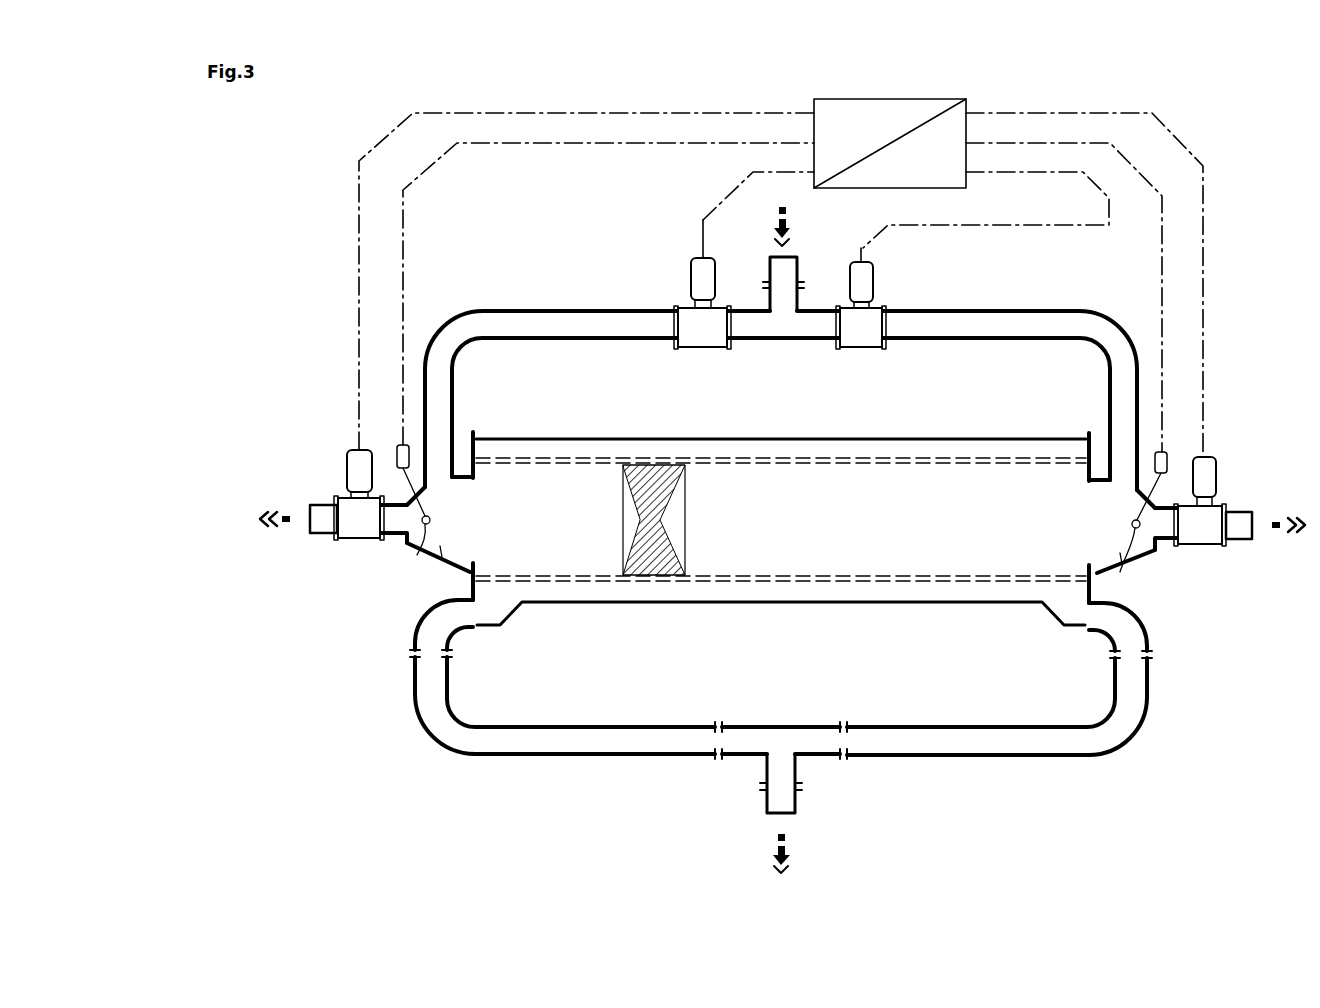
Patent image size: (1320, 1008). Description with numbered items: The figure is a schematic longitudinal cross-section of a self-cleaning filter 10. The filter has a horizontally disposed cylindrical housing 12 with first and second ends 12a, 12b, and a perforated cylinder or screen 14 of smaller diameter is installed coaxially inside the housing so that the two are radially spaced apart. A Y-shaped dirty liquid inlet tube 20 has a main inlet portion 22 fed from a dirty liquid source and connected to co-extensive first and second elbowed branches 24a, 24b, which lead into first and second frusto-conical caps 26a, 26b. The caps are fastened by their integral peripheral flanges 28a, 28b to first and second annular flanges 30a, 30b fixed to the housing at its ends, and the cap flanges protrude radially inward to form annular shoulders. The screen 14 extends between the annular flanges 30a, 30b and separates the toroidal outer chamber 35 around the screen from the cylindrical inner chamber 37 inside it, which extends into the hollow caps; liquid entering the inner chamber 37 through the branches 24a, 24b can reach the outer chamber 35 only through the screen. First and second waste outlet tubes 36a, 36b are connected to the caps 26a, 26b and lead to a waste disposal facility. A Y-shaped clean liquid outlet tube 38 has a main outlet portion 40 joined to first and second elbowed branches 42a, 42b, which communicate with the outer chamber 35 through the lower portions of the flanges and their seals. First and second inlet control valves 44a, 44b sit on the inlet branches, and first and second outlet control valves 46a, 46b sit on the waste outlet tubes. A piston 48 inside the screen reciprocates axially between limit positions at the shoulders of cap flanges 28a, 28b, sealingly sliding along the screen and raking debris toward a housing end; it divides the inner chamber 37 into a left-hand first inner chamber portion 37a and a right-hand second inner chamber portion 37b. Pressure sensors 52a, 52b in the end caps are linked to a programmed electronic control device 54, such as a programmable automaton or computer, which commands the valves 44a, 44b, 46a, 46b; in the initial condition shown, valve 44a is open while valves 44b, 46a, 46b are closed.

The self-cleaning filter 10 is at (515, 260).
The cylindrical housing 12 is at (845, 440).
The first end of housing 12a is at (387, 480).
The second end of housing 12b is at (1181, 482).
The perforated cylinder or screen 14 is at (952, 583).
The dirty liquid inlet tube 20 is at (591, 300).
The main inlet portion 22 is at (790, 265).
The first elbowed branch 24a is at (474, 326).
The second elbowed branch 24b is at (1022, 324).
The first frusto-conical cap 26a is at (440, 555).
The second frusto-conical cap 26b is at (1122, 560).
The first cap flange 28a is at (470, 582).
The second cap flange 28b is at (1095, 590).
The first annular flange 30a is at (478, 455).
The second annular flange 30b is at (1086, 457).
The outer chamber 35 is at (599, 450).
The first waste outlet tube 36a is at (323, 515).
The second waste outlet tube 36b is at (1172, 545).
The inner chamber 37 is at (727, 497).
The first inner chamber portion 37a is at (572, 542).
The second inner chamber portion 37b is at (822, 540).
The clean liquid outlet tube 38 is at (862, 762).
The main outlet portion 40 is at (780, 795).
The first elbowed branch of outlet tube 42a is at (440, 725).
The second elbowed branch of outlet tube 42b is at (1110, 735).
The first inlet control valve 44a is at (700, 272).
The second inlet control valve 44b is at (870, 322).
The first outlet control valve 46a is at (347, 533).
The second outlet control valve 46b is at (1210, 472).
The piston 48 is at (685, 533).
The first pressure sensor 52a is at (423, 548).
The second pressure sensor 52b is at (1142, 557).
The programmed electronic control device 54 is at (846, 104).